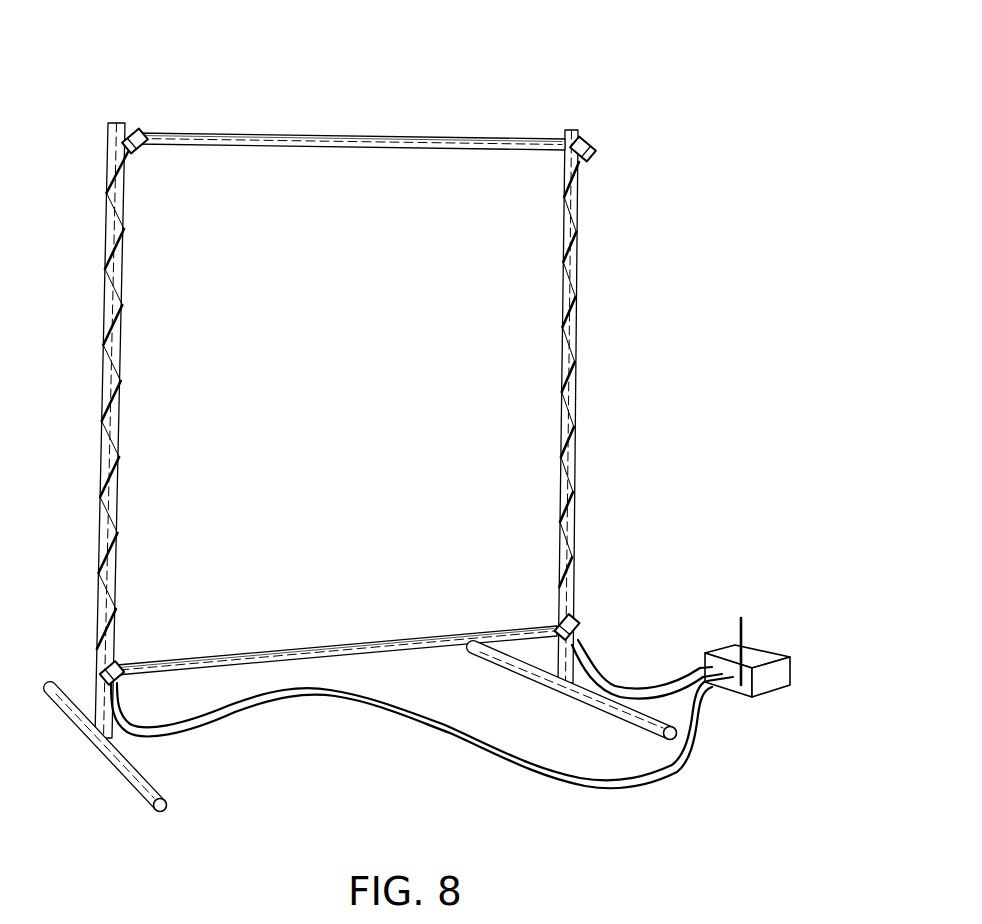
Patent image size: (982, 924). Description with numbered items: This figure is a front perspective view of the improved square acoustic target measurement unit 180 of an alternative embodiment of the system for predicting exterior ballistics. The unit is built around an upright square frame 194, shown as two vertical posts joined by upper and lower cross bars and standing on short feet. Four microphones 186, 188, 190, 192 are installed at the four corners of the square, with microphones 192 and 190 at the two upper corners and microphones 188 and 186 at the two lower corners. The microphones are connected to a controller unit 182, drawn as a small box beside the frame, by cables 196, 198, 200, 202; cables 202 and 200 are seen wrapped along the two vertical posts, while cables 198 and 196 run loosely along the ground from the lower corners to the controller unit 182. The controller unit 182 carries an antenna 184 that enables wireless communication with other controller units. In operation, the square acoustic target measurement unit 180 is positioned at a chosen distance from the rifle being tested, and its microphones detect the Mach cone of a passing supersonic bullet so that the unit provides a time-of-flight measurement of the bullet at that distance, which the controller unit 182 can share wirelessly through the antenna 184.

The square acoustic target measurement unit 180 is at (521, 80).
The controller unit 182 is at (765, 688).
The antenna 184 is at (746, 625).
The microphone 186 is at (578, 618).
The microphone 188 is at (118, 660).
The microphone 190 is at (586, 140).
The microphone 192 is at (138, 130).
The upright square frame 194 is at (317, 133).
The cable 196 is at (600, 704).
The cable 198 is at (124, 706).
The cable 200 is at (580, 178).
The cable 202 is at (118, 172).